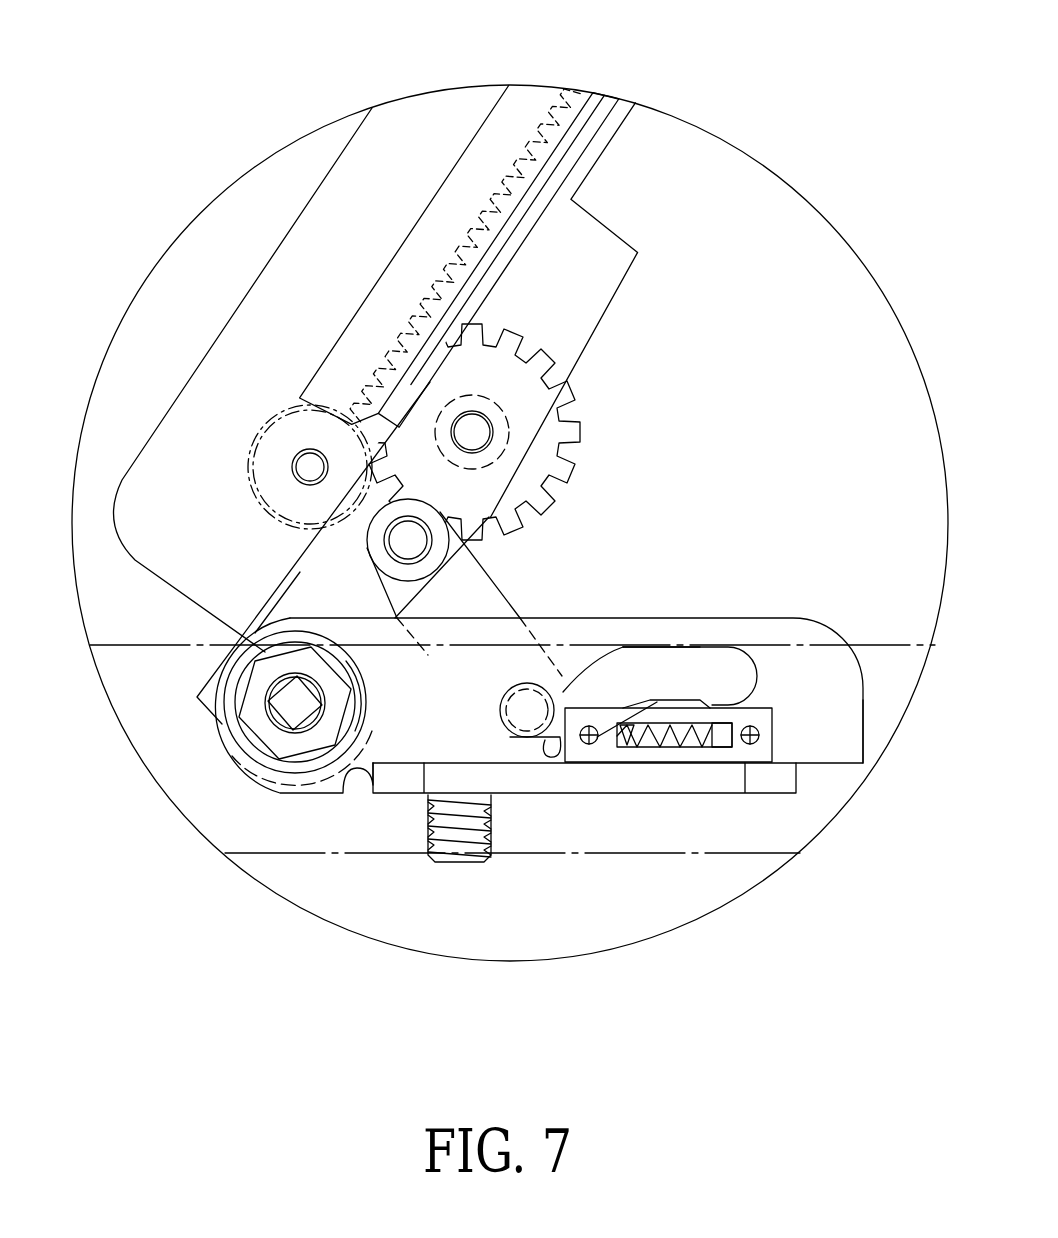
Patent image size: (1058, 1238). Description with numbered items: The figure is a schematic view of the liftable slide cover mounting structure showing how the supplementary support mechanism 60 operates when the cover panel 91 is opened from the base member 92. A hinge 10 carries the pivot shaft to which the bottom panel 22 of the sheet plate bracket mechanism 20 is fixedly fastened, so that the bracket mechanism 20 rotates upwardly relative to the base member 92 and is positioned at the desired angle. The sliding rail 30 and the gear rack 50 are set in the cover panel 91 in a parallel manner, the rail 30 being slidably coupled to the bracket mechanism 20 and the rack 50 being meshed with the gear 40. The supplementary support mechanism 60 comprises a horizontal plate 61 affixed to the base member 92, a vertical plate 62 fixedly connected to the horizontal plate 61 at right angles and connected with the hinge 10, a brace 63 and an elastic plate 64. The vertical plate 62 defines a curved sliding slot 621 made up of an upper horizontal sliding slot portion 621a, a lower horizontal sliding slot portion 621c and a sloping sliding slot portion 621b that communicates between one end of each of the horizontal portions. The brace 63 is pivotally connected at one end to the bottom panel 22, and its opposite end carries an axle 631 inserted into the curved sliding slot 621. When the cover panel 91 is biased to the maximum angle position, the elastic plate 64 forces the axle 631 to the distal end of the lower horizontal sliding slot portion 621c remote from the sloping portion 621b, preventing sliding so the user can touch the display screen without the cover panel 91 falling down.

The hinge 10 is at (253, 727).
The sheet plate bracket mechanism 20 is at (520, 235).
The bottom panel 22 is at (617, 270).
The sliding rail 30 is at (500, 160).
The gear 40 is at (587, 433).
The gear rack 50 is at (603, 157).
The supplementary support mechanism 60 is at (845, 617).
The horizontal plate 61 is at (692, 780).
The vertical plate 62 is at (840, 710).
The curved sliding slot 621 is at (678, 645).
The upper horizontal sliding slot portion 621a is at (650, 667).
The sloping sliding slot portion 621b is at (603, 687).
The lower horizontal sliding slot portion 621c is at (552, 745).
The brace 63 is at (503, 587).
The axle 631 is at (518, 740).
The elastic plate 64 is at (607, 755).
The cover panel 91 is at (238, 296).
The base member 92 is at (319, 853).